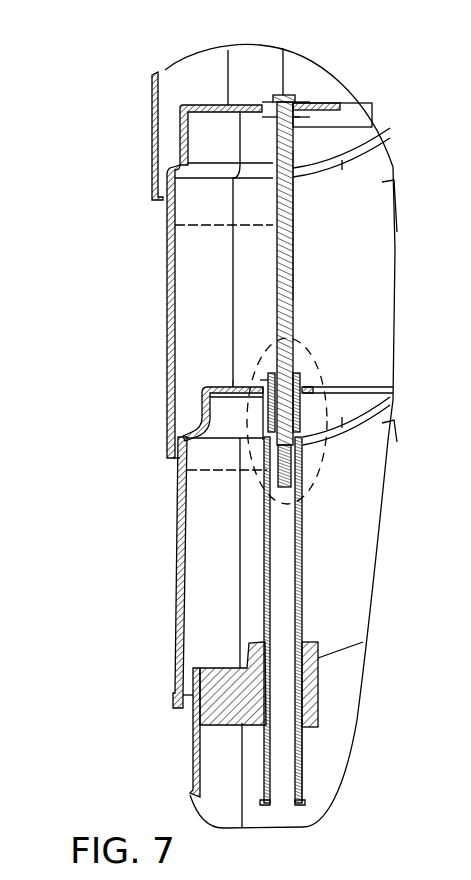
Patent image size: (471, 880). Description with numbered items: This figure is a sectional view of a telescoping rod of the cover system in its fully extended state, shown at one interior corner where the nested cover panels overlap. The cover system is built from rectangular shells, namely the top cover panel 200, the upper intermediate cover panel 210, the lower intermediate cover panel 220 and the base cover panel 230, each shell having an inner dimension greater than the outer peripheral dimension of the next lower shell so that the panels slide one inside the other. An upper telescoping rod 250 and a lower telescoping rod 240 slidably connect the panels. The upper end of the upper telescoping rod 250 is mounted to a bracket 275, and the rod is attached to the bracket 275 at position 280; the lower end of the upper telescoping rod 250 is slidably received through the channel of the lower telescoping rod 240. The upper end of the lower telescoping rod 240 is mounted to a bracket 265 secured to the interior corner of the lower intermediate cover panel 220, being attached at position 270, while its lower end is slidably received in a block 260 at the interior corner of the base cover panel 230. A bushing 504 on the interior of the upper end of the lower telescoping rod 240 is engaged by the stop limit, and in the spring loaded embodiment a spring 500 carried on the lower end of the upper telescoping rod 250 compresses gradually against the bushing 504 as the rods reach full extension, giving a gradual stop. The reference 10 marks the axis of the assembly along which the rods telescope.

The sprayer axis / direction 10 is at (268, 508).
The top cover panel 200 is at (152, 137).
The upper intermediate cover panel 210 is at (165, 322).
The lower intermediate cover panel 220 is at (177, 575).
The base cover panel 230 is at (192, 760).
The lower telescoping rod 240 is at (303, 547).
The upper telescoping rod 250 is at (295, 298).
The block 260 is at (318, 684).
The bracket 265 is at (220, 386).
The position 270 is at (309, 381).
The bracket 275 is at (208, 104).
The position 280 is at (300, 96).
The spring 500 is at (300, 768).
The bushing 504 is at (249, 384).